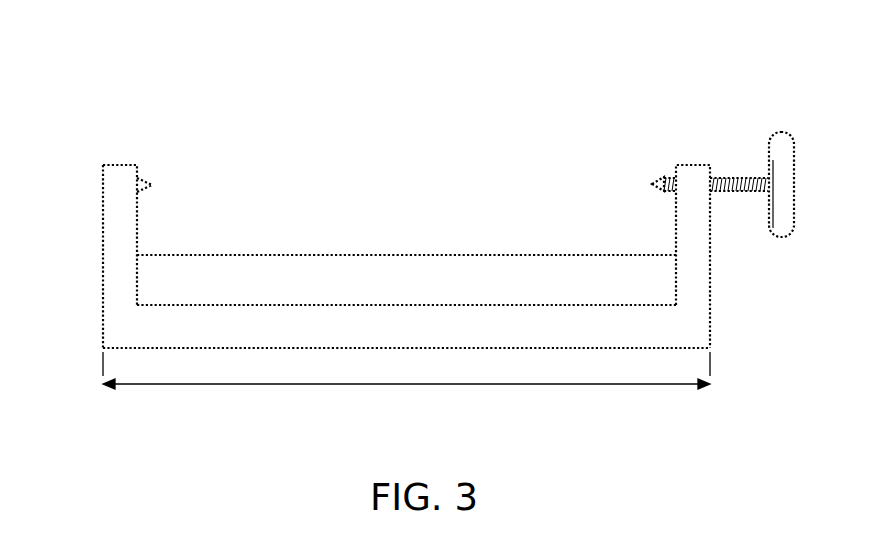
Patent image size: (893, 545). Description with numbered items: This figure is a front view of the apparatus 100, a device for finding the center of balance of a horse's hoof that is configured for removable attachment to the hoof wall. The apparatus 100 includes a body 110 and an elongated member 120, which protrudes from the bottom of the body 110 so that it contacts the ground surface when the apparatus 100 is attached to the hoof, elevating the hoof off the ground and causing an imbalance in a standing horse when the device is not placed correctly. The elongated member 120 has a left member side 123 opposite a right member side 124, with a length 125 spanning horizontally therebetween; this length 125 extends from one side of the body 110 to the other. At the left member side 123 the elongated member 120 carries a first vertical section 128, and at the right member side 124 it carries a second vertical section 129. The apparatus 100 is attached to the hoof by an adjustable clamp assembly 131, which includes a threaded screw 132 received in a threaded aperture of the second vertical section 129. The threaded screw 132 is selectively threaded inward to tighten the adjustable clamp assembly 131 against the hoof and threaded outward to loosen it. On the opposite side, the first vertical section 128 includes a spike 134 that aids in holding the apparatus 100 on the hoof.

The apparatus 100 is at (604, 72).
The body 110 is at (327, 262).
The elongated member 120 is at (435, 316).
The left member side 123 is at (122, 316).
The right member side 124 is at (700, 320).
The length 125 is at (530, 384).
The first vertical section 128 is at (118, 229).
The second vertical section 129 is at (706, 265).
The adjustable clamp assembly 131 is at (733, 140).
The threaded screw 132 is at (731, 194).
The spike 134 is at (150, 185).